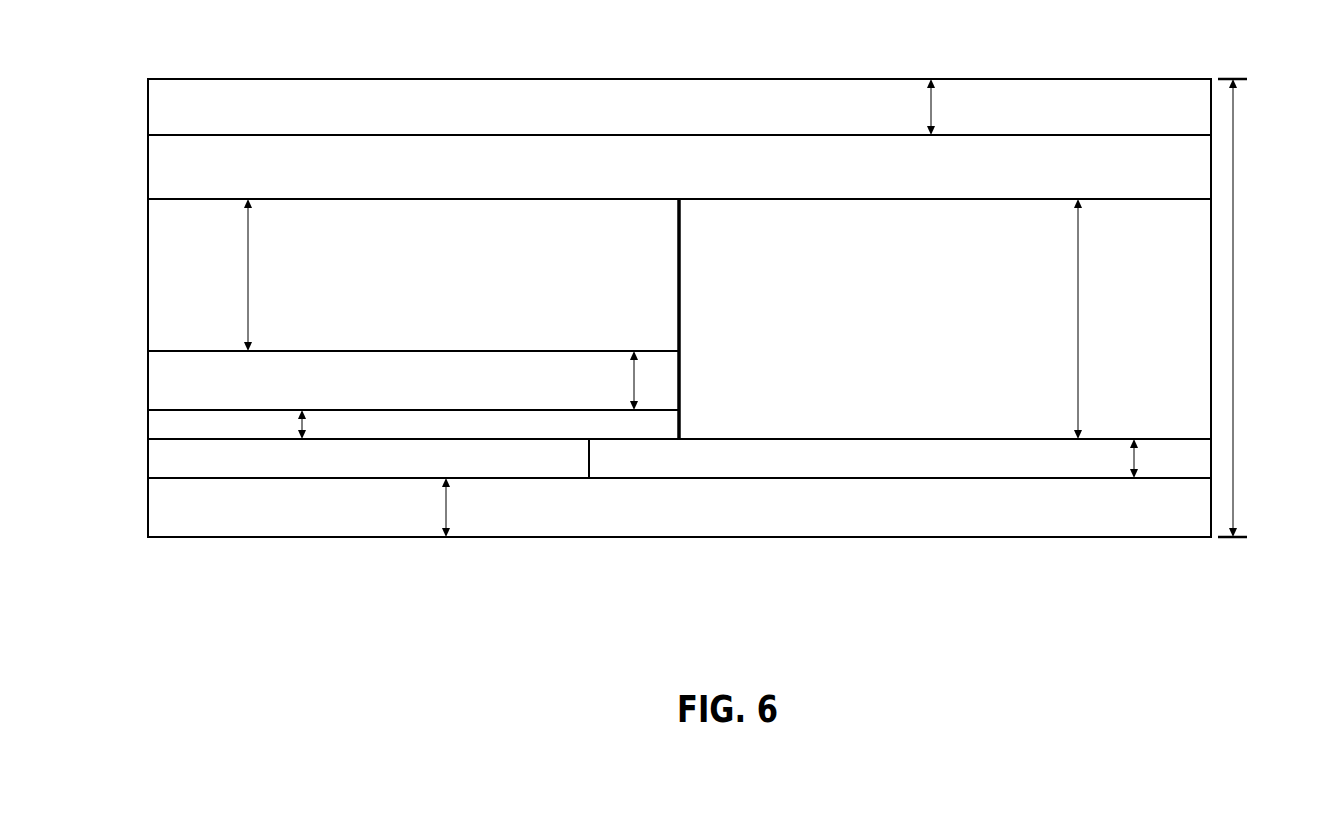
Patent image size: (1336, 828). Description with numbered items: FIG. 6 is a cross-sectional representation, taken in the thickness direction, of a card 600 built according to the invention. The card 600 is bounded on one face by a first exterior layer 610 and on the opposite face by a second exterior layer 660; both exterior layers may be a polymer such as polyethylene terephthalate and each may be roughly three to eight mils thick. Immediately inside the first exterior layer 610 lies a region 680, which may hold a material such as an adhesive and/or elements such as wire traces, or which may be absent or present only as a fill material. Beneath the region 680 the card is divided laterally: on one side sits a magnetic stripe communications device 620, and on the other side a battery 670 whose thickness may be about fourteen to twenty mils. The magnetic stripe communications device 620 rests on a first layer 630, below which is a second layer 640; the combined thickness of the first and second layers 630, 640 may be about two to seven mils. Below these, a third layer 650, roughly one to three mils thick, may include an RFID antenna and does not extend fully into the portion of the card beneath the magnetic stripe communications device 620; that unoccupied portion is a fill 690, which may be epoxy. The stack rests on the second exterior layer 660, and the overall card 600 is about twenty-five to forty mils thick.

The card 600 is at (1300, 313).
The first exterior layer 610 is at (160, 114).
The magnetic stripe communications device 620 is at (163, 290).
The first layer 630 is at (162, 378).
The second layer 640 is at (173, 427).
The third layer 650 is at (1177, 453).
The second exterior layer 660 is at (162, 524).
The battery 670 is at (853, 220).
The region 680 is at (432, 181).
The fill 690 is at (162, 474).